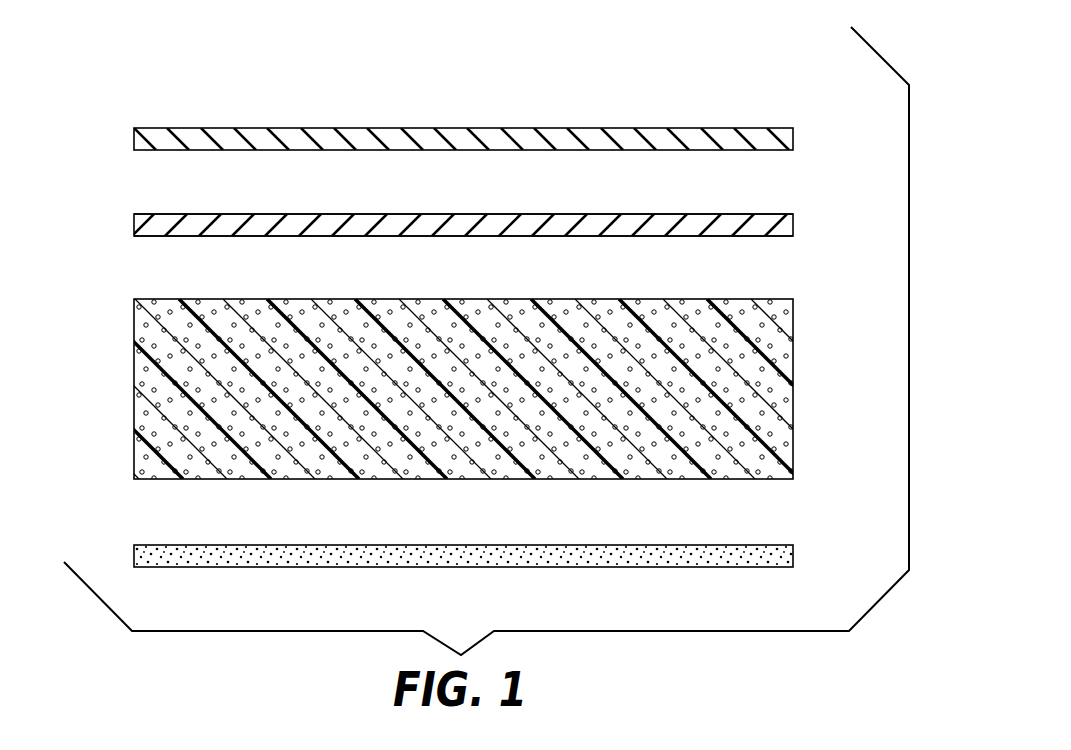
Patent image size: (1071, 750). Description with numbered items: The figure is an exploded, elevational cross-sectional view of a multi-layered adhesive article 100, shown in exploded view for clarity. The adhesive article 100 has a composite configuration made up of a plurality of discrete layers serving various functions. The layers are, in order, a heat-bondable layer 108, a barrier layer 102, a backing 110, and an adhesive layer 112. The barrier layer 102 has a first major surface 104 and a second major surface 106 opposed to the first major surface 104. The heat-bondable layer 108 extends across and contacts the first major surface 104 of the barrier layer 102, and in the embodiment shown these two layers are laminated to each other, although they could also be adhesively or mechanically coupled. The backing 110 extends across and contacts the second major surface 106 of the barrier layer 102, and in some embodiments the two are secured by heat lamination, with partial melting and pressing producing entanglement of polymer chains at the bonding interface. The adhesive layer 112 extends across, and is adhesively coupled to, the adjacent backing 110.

The adhesive article 100 is at (731, 90).
The barrier layer 102 is at (783, 227).
The first major surface 104 is at (760, 214).
The second major surface 106 is at (760, 236).
The heat-bondable layer 108 is at (787, 146).
The backing 110 is at (786, 391).
The adhesive layer 112 is at (792, 553).